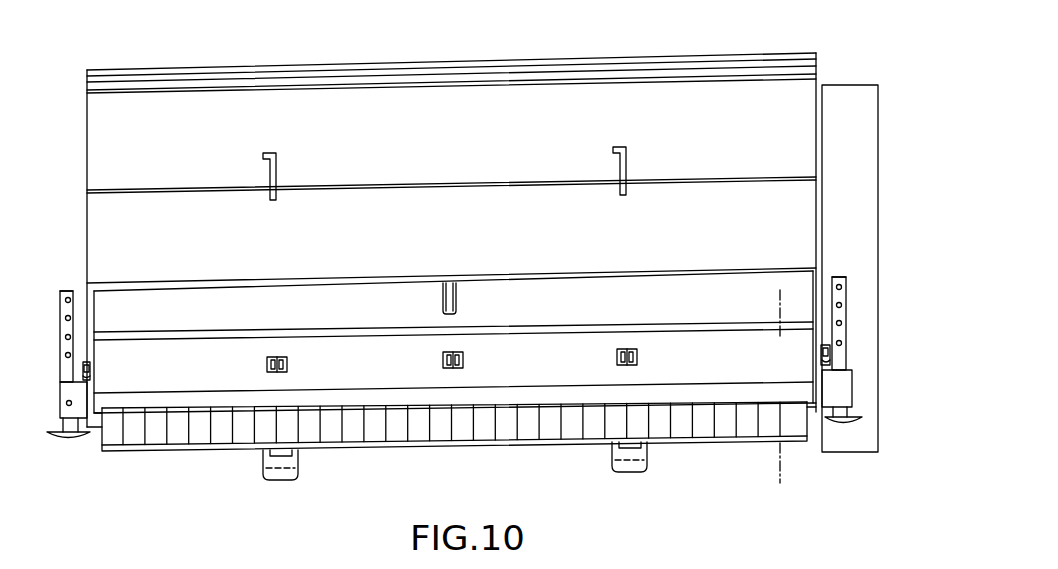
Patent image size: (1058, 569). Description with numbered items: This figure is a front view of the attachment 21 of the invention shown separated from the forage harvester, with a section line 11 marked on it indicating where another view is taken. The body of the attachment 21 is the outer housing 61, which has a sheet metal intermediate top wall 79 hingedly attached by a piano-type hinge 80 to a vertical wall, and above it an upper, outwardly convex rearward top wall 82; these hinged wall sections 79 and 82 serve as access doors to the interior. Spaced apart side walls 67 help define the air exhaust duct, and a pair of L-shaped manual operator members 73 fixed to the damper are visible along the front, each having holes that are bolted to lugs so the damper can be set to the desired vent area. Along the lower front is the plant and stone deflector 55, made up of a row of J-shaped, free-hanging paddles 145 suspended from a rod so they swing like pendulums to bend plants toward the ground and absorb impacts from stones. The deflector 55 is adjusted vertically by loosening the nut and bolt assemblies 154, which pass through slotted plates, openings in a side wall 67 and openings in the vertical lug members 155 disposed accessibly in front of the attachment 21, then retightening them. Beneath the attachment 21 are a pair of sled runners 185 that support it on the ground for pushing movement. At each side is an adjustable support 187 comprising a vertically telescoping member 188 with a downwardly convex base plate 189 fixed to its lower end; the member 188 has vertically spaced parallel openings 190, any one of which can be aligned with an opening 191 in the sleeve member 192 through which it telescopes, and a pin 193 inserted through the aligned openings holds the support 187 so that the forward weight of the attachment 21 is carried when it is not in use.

The attachment 21 is at (862, 52).
The piano-type hinge 80 is at (417, 84).
The upper rearward top wall 82 is at (660, 57).
The intermediate top wall 79 is at (795, 143).
The outer housing 61 is at (774, 213).
The side walls 67 is at (822, 247).
The L-shaped manual operator members 73 is at (278, 169).
The vertical lug members 155 is at (272, 356).
The nut and bolt assembly 154 is at (288, 360).
The adjustable support 187 is at (55, 302).
The telescoping member 188 is at (848, 290).
The openings 190 is at (843, 305).
The pin 193 is at (842, 386).
The opening 191 is at (847, 384).
The sleeve member 192 is at (853, 398).
The base plate 189 is at (70, 440).
The paddles 145 is at (486, 438).
The plant and stone deflector 55 is at (198, 453).
The sled runners 185 is at (280, 483).
The section line 11 is at (783, 500).